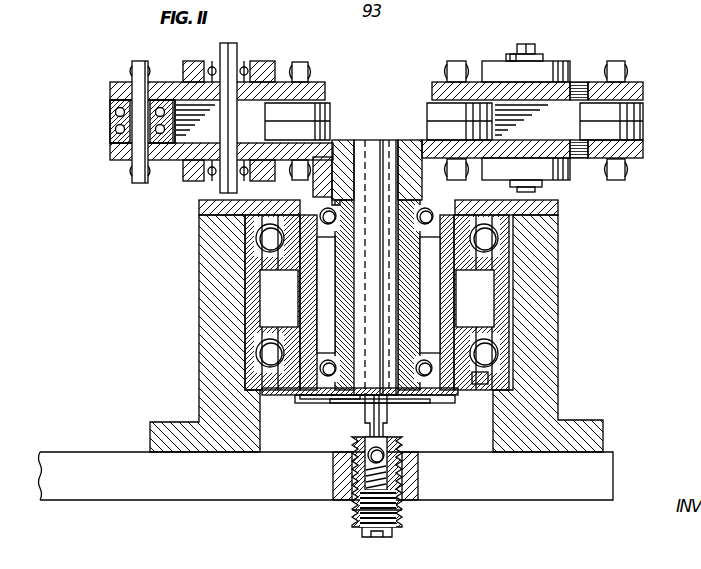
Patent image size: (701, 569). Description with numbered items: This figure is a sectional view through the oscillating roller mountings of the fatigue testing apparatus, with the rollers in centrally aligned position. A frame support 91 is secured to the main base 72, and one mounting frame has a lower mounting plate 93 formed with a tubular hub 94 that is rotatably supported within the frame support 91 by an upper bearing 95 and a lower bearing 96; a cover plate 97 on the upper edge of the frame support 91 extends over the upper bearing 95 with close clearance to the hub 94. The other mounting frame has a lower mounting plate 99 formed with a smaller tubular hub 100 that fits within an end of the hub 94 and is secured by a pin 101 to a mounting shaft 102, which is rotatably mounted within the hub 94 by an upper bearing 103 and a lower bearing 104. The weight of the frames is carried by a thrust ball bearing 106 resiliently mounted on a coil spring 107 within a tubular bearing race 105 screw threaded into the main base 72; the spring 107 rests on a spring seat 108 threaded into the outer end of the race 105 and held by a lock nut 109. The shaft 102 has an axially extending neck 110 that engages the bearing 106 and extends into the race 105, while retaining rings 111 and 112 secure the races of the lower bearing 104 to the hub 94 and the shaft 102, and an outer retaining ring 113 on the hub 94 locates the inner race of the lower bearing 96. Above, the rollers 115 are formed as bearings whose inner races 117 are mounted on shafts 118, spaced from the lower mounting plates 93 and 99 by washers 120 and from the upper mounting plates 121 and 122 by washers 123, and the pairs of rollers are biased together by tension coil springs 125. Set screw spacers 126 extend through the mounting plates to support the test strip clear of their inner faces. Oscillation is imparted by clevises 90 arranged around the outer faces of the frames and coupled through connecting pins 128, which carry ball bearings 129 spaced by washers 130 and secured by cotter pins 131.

The main base 72 is at (124, 488).
The clevis 90 is at (193, 61).
The frame support 91 is at (212, 392).
The lower mounting plate 93 is at (112, 152).
The tubular hub 94 is at (300, 402).
The upper bearing 95 is at (262, 238).
The lower bearing 96 is at (262, 353).
The cover plate 97 is at (215, 211).
The lower mounting plate 99 is at (640, 155).
The tubular hub 100 is at (349, 143).
The pin 101 is at (384, 142).
The mounting shaft 102 is at (371, 175).
The upper bearing 103 is at (417, 216).
The lower bearing 104 is at (416, 365).
The tubular bearing race 105 is at (403, 512).
The thrust ball bearing 106 is at (385, 453).
The coil spring 107 is at (403, 458).
The spring seat 108 is at (350, 520).
The lock nut 109 is at (394, 527).
The neck 110 is at (384, 428).
The retaining ring 111 is at (316, 403).
The retaining ring 112 is at (346, 403).
The outer retaining ring 113 is at (466, 388).
The rollers 115 is at (112, 112).
The inner races 117 is at (134, 104).
The shafts 118 is at (146, 63).
The washers 120 is at (110, 143).
The upper mounting plate 121 is at (110, 88).
The upper mounting plate 122 is at (640, 91).
The washers 123 is at (112, 102).
The tension coil springs 125 is at (312, 71).
The set screw spacers 126 is at (584, 82).
The connecting pins 128 is at (229, 44).
The ball bearings 129 is at (245, 63).
The washers 130 is at (270, 72).
The cotter pins 131 is at (247, 63).